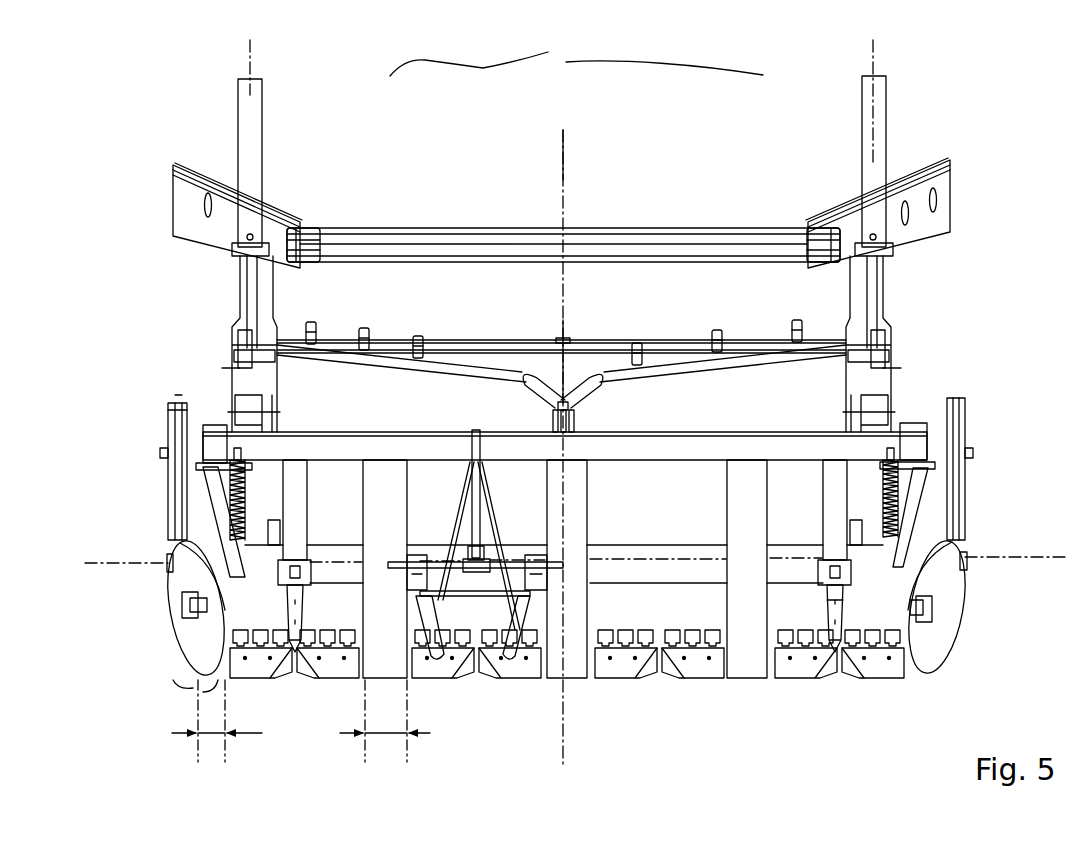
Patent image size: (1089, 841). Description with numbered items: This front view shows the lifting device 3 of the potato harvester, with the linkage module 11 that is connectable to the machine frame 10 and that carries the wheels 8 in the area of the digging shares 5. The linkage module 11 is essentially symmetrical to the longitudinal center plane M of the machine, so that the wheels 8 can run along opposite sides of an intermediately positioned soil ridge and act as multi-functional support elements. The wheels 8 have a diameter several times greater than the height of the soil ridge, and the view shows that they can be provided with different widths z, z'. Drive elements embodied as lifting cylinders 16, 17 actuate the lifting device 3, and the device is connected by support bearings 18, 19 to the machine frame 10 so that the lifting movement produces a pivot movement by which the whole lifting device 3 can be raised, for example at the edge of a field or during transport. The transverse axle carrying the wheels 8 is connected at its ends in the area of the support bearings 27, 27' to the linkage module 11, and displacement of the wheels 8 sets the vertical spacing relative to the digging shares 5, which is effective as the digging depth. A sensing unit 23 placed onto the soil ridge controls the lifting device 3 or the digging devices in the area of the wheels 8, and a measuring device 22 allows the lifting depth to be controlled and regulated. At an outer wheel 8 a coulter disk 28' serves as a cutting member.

The lifting device 3 is at (576, 54).
The lifting cylinder 16 is at (247, 157).
The lifting cylinder 17 is at (880, 146).
The machine frame 10 is at (300, 211).
The linkage module 11 is at (690, 228).
The longitudinal center plane M is at (555, 152).
The support bearing 18 is at (243, 357).
The support bearing 19 is at (884, 359).
The wheel 8 is at (392, 518).
The support bearing 27 is at (170, 585).
The support bearing 27' is at (979, 575).
The coulter disk 28' is at (569, 649).
The measuring device 22 is at (515, 622).
The lifting share 5 is at (300, 692).
The sensing unit 23 is at (831, 634).
The width z is at (385, 734).
The width z' is at (183, 731).